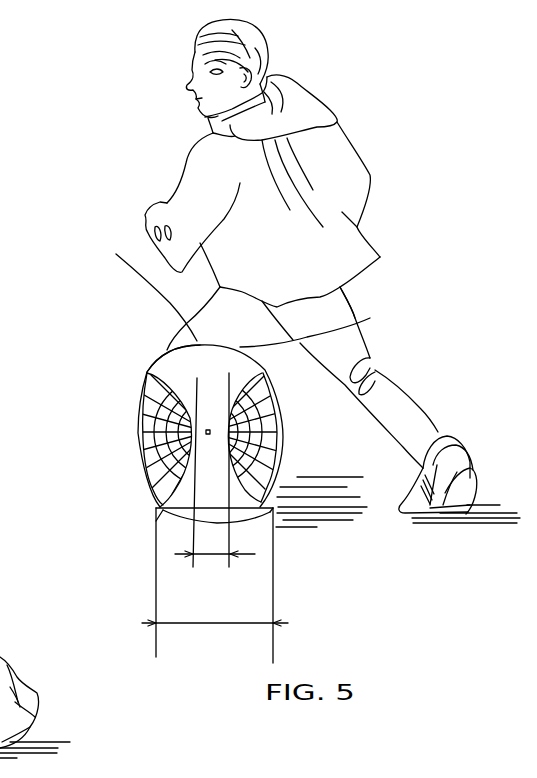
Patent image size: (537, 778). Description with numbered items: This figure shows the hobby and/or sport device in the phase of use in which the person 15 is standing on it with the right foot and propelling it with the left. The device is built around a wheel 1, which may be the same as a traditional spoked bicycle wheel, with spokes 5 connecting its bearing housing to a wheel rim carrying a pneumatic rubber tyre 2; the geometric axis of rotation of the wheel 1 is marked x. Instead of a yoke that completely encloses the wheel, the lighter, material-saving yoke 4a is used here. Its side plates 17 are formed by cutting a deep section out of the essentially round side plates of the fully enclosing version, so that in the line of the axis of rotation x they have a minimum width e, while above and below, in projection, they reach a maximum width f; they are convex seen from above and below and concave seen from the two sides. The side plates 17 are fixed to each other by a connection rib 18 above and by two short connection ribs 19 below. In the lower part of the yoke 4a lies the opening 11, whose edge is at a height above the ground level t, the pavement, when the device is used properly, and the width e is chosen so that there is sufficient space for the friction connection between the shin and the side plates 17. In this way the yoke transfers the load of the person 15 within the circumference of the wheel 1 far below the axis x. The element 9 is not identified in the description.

The wheel 1 is at (133, 424).
The pneumatic rubber tyre 2 is at (141, 385).
The yoke 4a is at (147, 373).
The spokes 5 is at (148, 470).
The base plate 9 is at (157, 538).
The opening 11 is at (227, 545).
The person using the device 15 is at (371, 151).
The side plates 17 is at (357, 328).
The connection rib 18 is at (152, 355).
The short connection ribs 19 is at (157, 521).
The geometric axis of rotation x is at (212, 431).
The minimum width e is at (206, 556).
The maximum width f is at (232, 623).
The ground level t is at (512, 492).